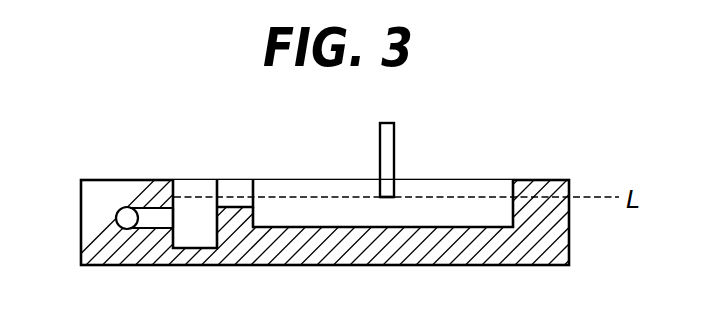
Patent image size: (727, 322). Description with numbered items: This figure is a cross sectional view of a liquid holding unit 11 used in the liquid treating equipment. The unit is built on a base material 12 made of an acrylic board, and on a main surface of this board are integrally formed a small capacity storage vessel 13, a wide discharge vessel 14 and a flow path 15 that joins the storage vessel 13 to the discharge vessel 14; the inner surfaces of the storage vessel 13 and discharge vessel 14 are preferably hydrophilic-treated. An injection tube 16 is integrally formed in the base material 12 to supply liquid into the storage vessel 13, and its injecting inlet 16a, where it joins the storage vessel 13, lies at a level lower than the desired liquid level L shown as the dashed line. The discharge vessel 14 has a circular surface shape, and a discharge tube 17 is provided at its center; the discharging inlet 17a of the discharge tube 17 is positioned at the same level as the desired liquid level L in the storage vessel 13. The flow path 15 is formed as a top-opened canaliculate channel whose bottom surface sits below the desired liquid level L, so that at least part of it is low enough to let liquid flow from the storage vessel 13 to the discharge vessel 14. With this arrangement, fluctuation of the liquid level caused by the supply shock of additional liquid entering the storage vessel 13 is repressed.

The liquid holding unit 11 is at (498, 164).
The base material 12 is at (358, 256).
The storage vessel 13 is at (197, 178).
The discharge vessel 14 is at (429, 172).
The flow path 15 is at (232, 178).
The injection tube 16 is at (152, 219).
The injecting inlet 16a is at (174, 219).
The discharge tube 17 is at (380, 147).
The discharging inlet 17a is at (387, 198).